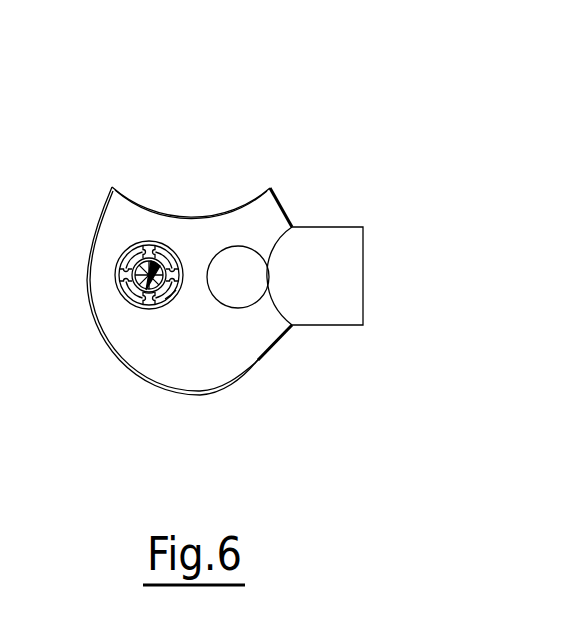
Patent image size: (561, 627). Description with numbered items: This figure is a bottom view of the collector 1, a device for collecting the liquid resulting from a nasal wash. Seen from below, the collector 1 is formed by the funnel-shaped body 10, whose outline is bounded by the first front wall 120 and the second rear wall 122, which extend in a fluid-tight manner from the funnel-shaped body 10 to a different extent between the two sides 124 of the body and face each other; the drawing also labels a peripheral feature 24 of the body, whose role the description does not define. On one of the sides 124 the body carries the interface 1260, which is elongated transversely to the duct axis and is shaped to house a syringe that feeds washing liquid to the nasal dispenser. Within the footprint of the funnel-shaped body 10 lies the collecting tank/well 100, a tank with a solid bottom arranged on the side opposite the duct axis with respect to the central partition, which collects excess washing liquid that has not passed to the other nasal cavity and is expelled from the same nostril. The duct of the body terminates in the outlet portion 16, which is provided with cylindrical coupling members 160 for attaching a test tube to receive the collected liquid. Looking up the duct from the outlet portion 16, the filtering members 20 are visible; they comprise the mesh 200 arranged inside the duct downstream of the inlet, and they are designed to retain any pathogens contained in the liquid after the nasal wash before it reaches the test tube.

The collector 1 is at (353, 72).
The funnel-shaped body 10 is at (161, 355).
The outlet portion 16 is at (143, 297).
The filtering members 20 is at (104, 244).
The peripheral edge 24 is at (82, 308).
The collecting tank/well 100 is at (235, 281).
The first front wall 120 is at (218, 393).
The second rear wall 122 is at (196, 219).
The sides 124 is at (297, 203).
The cylindrical coupling members 160 is at (186, 330).
The mesh 200 is at (133, 272).
The interface 1260 is at (315, 267).